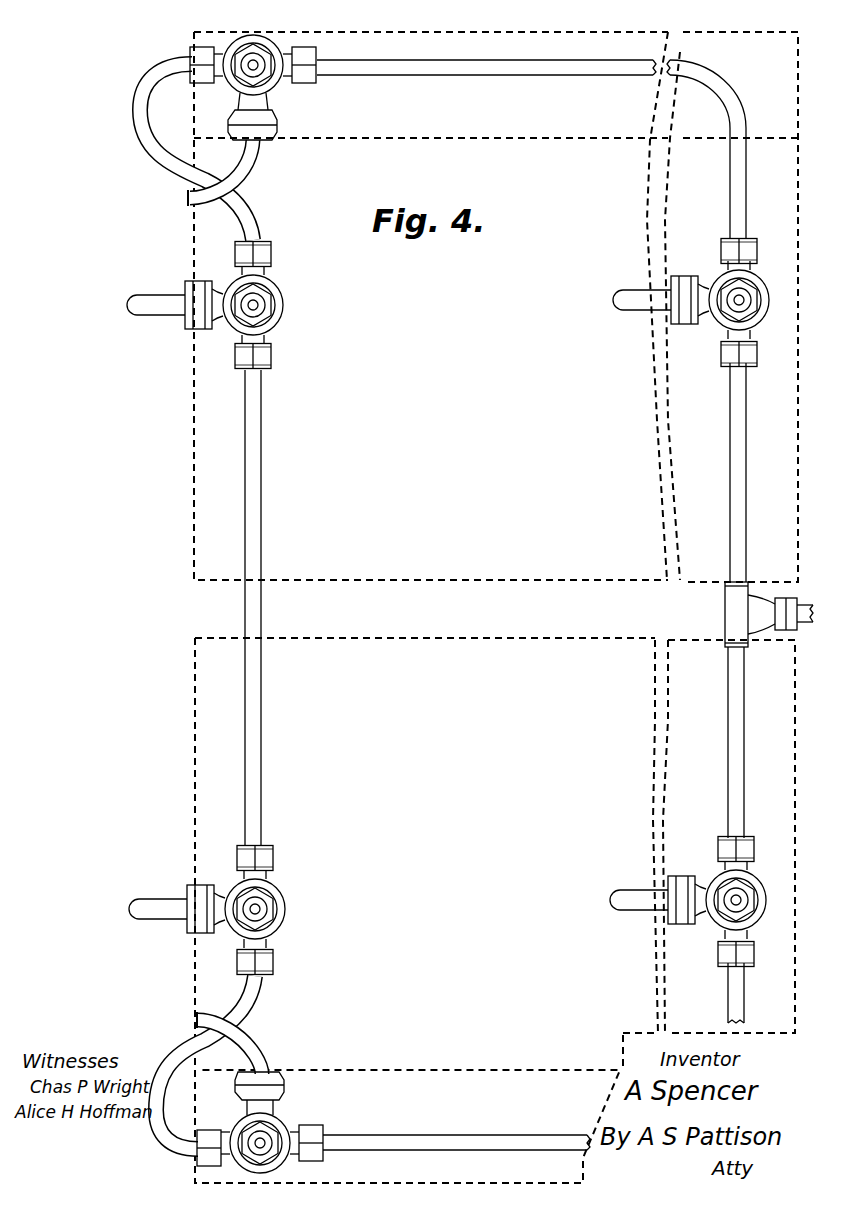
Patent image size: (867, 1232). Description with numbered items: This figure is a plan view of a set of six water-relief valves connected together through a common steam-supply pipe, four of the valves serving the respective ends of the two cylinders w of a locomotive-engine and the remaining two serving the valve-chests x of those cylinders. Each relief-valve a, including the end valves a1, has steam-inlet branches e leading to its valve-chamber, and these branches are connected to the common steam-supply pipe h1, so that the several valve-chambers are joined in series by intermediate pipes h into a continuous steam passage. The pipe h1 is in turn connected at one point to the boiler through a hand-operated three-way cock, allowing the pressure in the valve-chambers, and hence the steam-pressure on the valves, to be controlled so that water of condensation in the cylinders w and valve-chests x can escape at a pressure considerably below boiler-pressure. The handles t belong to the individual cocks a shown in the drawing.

The three-way cock a1 is at (285, 1128).
The cock a is at (283, 305).
The steam-inlet branch e is at (268, 266).
The pipe h is at (625, 66).
The common steam-supply pipe h1 is at (800, 600).
The hose and handle t is at (215, 195).
The valve-chest x is at (486, 605).
The cylinder w is at (496, 607).